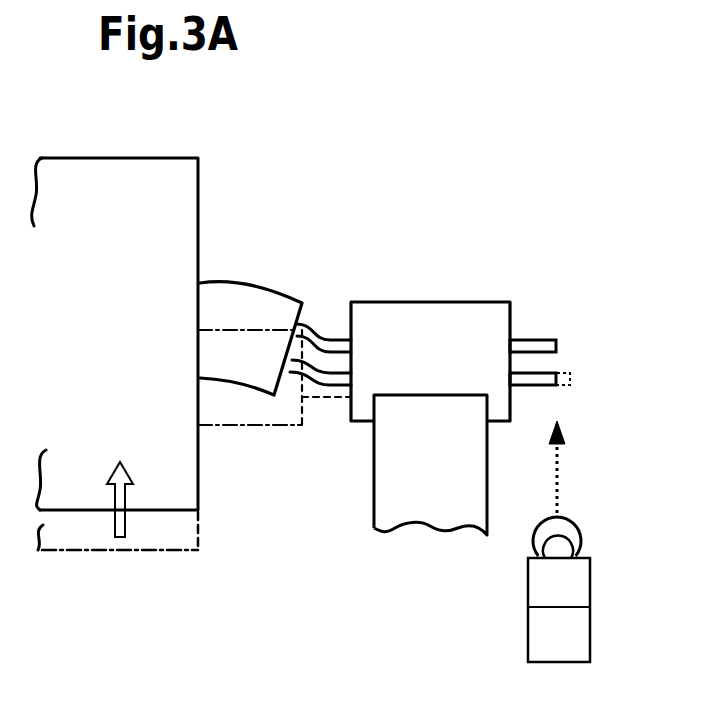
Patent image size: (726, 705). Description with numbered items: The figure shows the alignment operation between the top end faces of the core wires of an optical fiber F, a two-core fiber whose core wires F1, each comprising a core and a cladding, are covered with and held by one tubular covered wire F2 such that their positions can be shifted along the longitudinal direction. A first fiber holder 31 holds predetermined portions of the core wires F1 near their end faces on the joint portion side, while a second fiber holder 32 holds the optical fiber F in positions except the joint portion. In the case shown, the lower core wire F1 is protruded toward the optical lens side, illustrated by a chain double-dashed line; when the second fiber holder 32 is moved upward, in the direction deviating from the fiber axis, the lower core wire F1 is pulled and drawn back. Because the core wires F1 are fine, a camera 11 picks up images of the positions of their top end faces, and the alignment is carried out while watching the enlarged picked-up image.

The second fiber holder 32 is at (108, 158).
The first fiber holder 31 is at (436, 302).
The camera 11 is at (590, 578).
The optical fiber F is at (384, 410).
The core wire F1 is at (315, 400).
The covered wire F2 is at (256, 395).